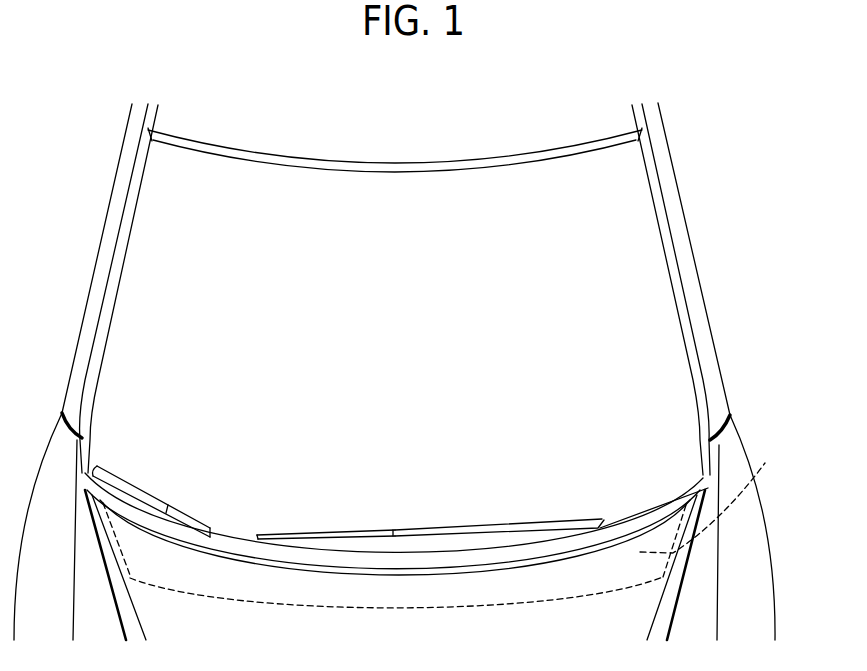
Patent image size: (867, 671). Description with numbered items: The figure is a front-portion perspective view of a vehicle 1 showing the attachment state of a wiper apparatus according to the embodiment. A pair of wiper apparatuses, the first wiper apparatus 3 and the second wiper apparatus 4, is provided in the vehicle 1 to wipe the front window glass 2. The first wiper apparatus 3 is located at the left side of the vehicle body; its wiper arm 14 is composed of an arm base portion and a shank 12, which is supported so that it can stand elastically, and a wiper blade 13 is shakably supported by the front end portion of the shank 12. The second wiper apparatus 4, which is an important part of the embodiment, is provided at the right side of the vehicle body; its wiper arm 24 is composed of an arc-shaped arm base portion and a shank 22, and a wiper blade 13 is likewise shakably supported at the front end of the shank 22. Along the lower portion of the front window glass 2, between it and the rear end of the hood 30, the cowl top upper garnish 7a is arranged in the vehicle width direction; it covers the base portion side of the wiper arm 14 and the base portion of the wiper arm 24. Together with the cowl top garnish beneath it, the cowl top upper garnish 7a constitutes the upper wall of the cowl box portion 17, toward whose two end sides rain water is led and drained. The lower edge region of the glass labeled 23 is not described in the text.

The vehicle 1 is at (56, 163).
The front window glass 2 is at (386, 396).
The first wiper apparatus 3 is at (435, 487).
The second wiper apparatus 4 is at (200, 471).
The cowl top upper garnish 7a is at (450, 558).
The shank 12 is at (504, 494).
The wiper blade 13 is at (338, 532).
The wiper arm 14 is at (522, 530).
The cowl box portion 17 is at (765, 463).
The shank 22 is at (200, 495).
The windshield lower edge 23 is at (113, 476).
The wiper arm 24 is at (195, 522).
The hood 30 is at (381, 645).